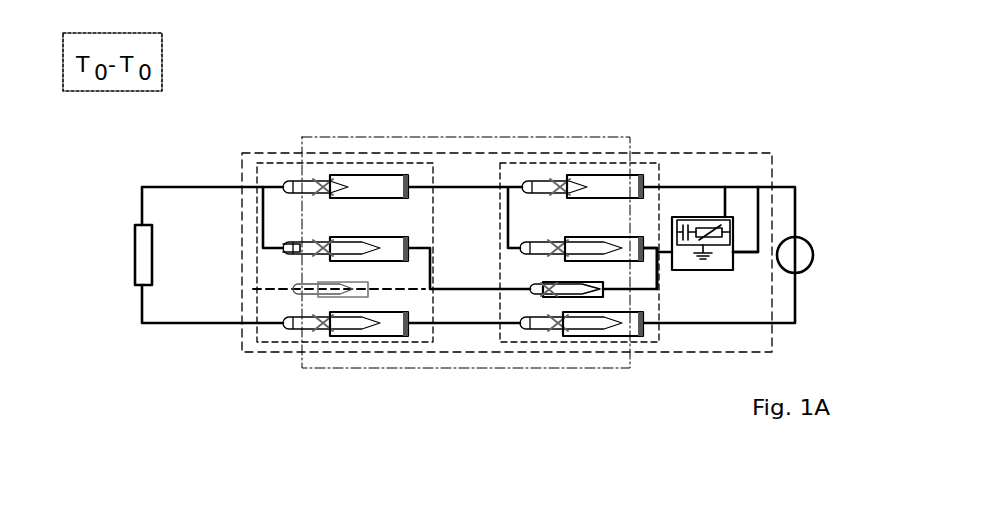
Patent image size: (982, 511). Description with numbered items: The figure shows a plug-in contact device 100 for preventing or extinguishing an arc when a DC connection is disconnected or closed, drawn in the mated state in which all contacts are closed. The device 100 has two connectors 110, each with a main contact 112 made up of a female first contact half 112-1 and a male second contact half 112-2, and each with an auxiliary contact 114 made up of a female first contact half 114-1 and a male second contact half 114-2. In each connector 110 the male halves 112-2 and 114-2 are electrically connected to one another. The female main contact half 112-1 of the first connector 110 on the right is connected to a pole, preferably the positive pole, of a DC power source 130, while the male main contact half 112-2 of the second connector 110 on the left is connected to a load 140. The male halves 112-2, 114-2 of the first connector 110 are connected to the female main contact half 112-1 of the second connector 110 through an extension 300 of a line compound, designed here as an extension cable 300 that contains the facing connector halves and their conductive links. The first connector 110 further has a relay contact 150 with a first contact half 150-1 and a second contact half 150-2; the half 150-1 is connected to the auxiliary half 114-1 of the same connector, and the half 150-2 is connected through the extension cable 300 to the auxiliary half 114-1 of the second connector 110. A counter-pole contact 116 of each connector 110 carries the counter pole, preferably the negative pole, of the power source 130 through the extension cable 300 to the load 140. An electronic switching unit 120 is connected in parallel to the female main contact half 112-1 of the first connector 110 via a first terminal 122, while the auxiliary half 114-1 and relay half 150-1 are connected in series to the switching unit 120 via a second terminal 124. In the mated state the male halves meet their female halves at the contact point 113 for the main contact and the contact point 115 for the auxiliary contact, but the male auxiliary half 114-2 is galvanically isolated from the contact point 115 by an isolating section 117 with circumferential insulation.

The plug-in contact device 100 is at (772, 155).
The connector 110 is at (653, 162).
The main contact 112 is at (436, 109).
The first contact half of main contact 112-1 is at (388, 174).
The second contact half of main contact 112-2 is at (283, 186).
The contact point of main contact 113 is at (318, 175).
The auxiliary contact 114 is at (407, 175).
The first contact half of auxiliary contact 114-1 is at (406, 240).
The second contact half of auxiliary contact 114-2 is at (293, 242).
The contact point of auxiliary contact 115 is at (315, 257).
The counter-pole contact 116 is at (357, 386).
The isolating section 117 is at (317, 247).
The electronic switching unit 120 is at (725, 216).
The first terminal 122 is at (746, 253).
The second terminal 124 is at (660, 250).
The DC power source 130 is at (797, 258).
The load 140 is at (134, 256).
The relay contact 150 is at (560, 368).
The first contact half of relay contact 150-1 is at (597, 297).
The second contact half of relay contact 150-2 is at (538, 292).
The extension of a line compound 300 is at (317, 369).